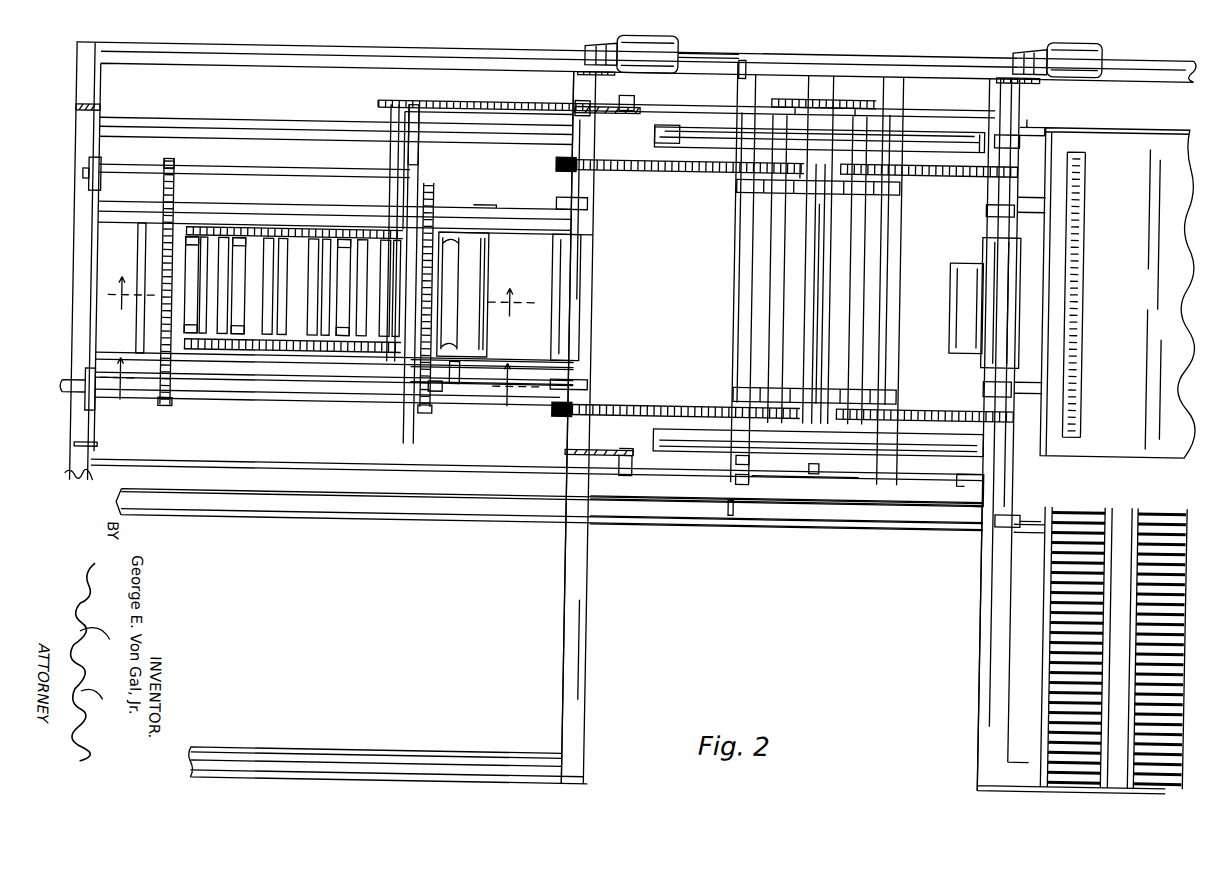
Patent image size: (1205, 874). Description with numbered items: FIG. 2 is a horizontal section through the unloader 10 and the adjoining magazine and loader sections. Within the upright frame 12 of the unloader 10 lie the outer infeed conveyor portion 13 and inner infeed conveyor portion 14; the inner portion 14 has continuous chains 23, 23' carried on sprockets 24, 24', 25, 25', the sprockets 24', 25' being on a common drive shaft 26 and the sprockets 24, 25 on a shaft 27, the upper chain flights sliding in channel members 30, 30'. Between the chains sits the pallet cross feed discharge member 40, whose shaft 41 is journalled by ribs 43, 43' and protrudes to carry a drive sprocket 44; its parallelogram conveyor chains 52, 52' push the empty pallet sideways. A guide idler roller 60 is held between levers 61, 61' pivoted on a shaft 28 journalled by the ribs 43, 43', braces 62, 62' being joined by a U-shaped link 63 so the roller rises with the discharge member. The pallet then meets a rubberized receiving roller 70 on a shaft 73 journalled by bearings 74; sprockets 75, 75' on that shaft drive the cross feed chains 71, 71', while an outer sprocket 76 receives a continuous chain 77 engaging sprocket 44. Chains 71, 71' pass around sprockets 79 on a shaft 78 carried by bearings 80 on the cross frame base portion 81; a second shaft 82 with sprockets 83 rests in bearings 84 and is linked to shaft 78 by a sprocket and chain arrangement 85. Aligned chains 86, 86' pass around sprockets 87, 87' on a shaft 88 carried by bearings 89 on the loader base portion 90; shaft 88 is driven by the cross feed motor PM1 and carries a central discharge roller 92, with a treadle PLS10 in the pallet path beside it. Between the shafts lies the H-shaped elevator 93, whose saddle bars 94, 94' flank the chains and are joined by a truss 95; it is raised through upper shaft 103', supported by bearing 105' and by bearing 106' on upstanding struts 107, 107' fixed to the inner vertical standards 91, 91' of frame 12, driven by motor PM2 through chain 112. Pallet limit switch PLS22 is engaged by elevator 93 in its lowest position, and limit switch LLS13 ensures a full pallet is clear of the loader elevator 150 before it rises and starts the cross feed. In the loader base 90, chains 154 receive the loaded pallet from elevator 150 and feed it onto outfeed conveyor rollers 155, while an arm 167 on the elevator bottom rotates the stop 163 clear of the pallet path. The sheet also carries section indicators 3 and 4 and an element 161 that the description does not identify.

The unloader 10 is at (69, 163).
The upright frame 12 is at (92, 118).
The outer infeed conveyor portion 13 is at (557, 606).
The inner infeed conveyor portion 14 is at (156, 346).
The continuous chain 23 is at (182, 281).
The continuous chain 23' is at (441, 290).
The sprocket 24 is at (177, 409).
The sprocket 24' is at (186, 157).
The sprocket 25 is at (436, 410).
The sprocket 25' is at (435, 138).
The common drive shaft 26 is at (264, 180).
The shaft 27 is at (273, 405).
The shaft 28 is at (482, 330).
The channel member 30 is at (137, 288).
The channel member 30' is at (335, 209).
The pallet cross feed discharge member 40 is at (322, 236).
The shaft 41 is at (390, 148).
The rib 43 is at (492, 379).
The rib 43' is at (516, 243).
The drive sprocket 44 is at (383, 98).
The chain 52 is at (292, 356).
The chain 52' is at (294, 224).
The idler roller 60 is at (454, 272).
The lever 61 is at (473, 352).
The lever 61' is at (476, 242).
The brace 62 is at (334, 367).
The brace 62' is at (467, 372).
The U-shaped link 63 is at (442, 390).
The receiving roller 70 is at (550, 297).
The cross feed chain 71 is at (686, 401).
The cross feed chain 71' is at (690, 177).
The shaft 73 is at (567, 181).
The bearing 74 is at (553, 204).
The sprocket 75 is at (553, 418).
The sprocket 75' is at (549, 161).
The sprocket 76 is at (568, 104).
The continuous chain 77 is at (480, 100).
The shaft 78 is at (772, 302).
The sprocket 79 is at (784, 428).
The bearing 80 is at (774, 191).
The cross frame base portion 81 is at (706, 526).
The second shaft 82 is at (836, 248).
The sprocket 83 is at (824, 180).
The bearing 84 is at (834, 190).
The sprocket and chain arrangement 85 is at (828, 94).
The cross feed chain 86 is at (925, 404).
The cross feed chain 86' is at (929, 162).
The sprocket 87 is at (996, 395).
The sprocket 87' is at (1000, 195).
The shaft 88 is at (986, 216).
The bearing 89 is at (984, 204).
The loader base portion 90 is at (982, 590).
The inner vertical standard 91 is at (585, 448).
The inner vertical standard 91' is at (591, 117).
The central discharge roller 92 is at (980, 249).
The elevator 93 is at (650, 142).
The saddle bar 94 is at (806, 436).
The saddle bar 94' is at (819, 148).
The truss 95 is at (822, 146).
The horizontal upper shaft 103' is at (805, 479).
The bearing 105' is at (959, 490).
The bearing 106' is at (613, 474).
The upstanding strut 107 is at (615, 442).
The upstanding strut 107' is at (614, 101).
The chain 112 is at (570, 72).
The loader elevator 150 is at (1110, 122).
The chain 154 is at (1082, 231).
The outfeed conveyor roller 155 is at (1006, 645).
The block 161 is at (990, 142).
The stop 163 is at (973, 133).
The arm 167 is at (1022, 120).
The cross feed motor PM1 is at (1078, 35).
The motor PM2 is at (658, 35).
The treadle PLS10 is at (952, 308).
The pallet limit switch PLS22 is at (734, 477).
The limit switch LLS13 is at (997, 524).
The section line 3 is at (321, 307).
The section line 4 is at (320, 392).